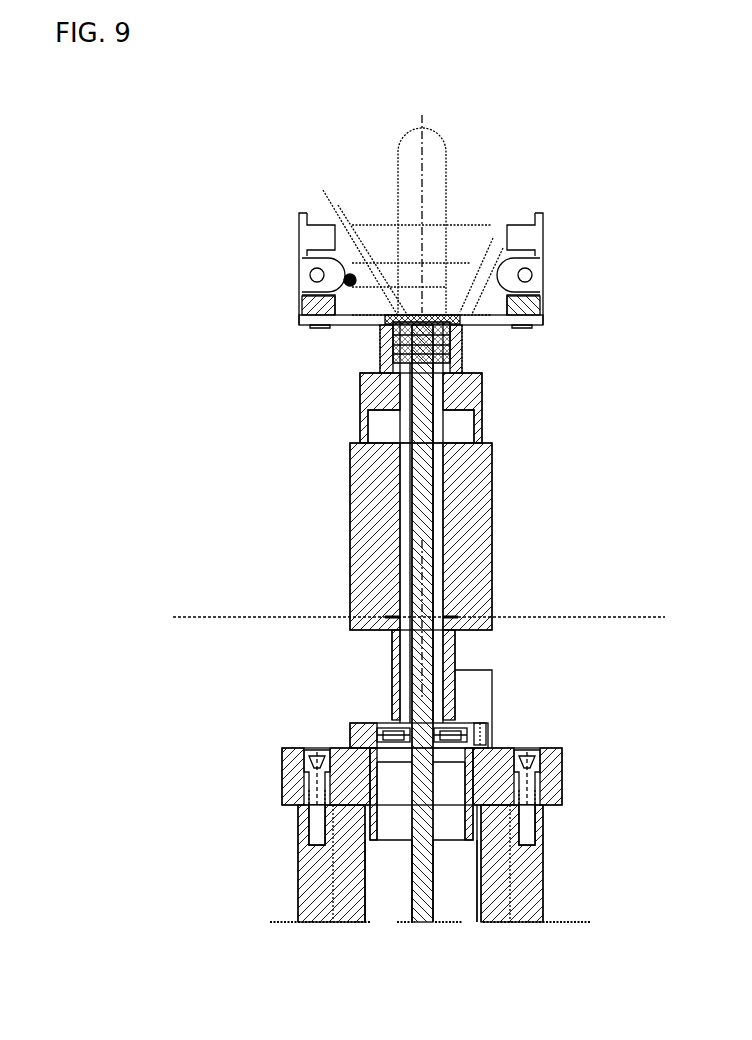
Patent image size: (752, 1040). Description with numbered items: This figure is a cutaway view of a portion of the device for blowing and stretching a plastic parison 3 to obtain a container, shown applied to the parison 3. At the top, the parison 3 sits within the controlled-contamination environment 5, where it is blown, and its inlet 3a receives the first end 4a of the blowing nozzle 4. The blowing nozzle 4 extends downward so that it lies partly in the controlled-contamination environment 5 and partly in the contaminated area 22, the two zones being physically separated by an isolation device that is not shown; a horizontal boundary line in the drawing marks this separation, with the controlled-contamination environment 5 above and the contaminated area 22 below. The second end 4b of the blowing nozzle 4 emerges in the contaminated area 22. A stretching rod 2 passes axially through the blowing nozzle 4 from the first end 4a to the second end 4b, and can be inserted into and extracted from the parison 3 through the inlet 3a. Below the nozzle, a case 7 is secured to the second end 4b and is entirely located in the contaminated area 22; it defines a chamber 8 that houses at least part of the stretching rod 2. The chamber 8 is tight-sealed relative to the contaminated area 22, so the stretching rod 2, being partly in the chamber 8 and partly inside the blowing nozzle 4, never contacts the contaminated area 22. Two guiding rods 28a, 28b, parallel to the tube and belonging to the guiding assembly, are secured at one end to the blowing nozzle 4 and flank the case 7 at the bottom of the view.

The stretching rod 2 is at (422, 488).
The plastic parison 3 is at (432, 175).
The inlet of the parison 3a is at (440, 343).
The blowing nozzle 4 is at (503, 532).
The first end of the blowing nozzle 4a is at (392, 381).
The second end of the blowing nozzle 4b is at (452, 800).
The controlled-contamination environment 5 is at (216, 583).
The case 7 is at (482, 888).
The chamber 8 is at (398, 892).
The contaminated area 22 is at (216, 663).
The guiding rod 28a is at (307, 875).
The guiding rod 28b is at (527, 862).